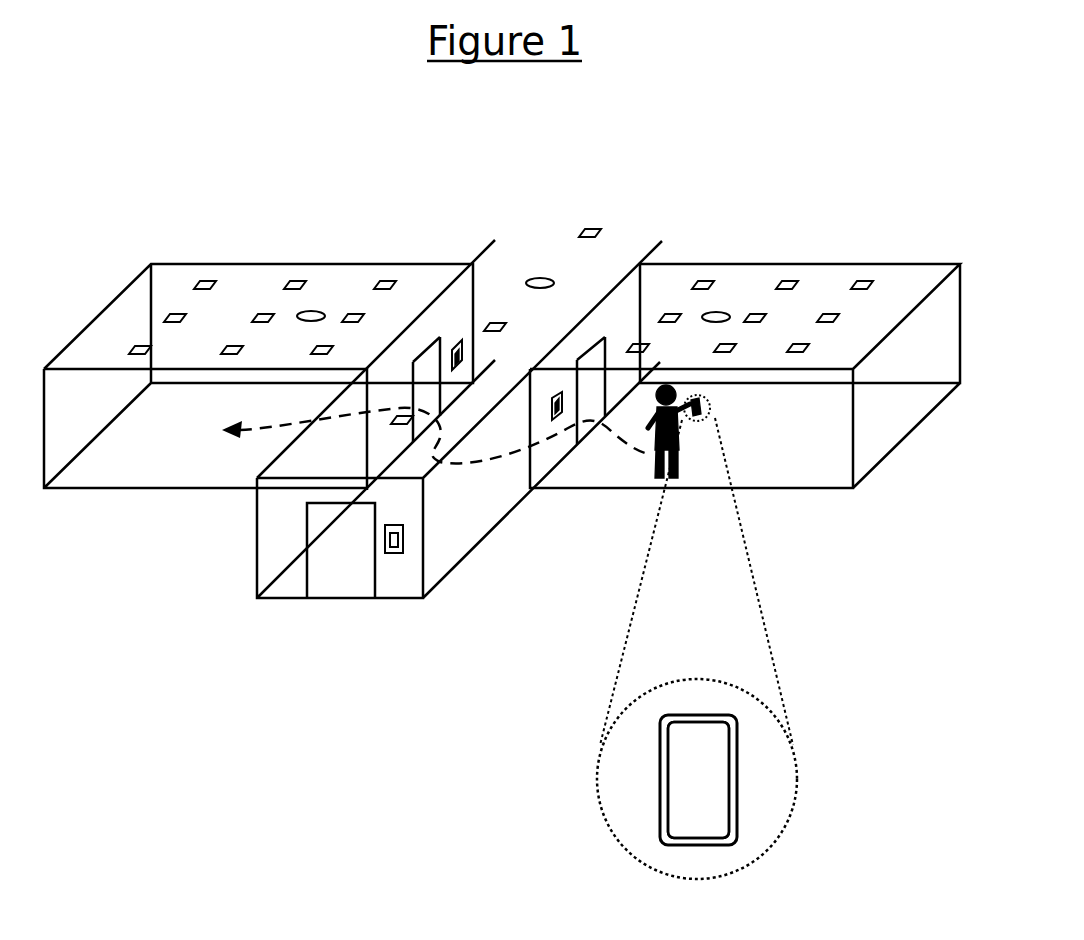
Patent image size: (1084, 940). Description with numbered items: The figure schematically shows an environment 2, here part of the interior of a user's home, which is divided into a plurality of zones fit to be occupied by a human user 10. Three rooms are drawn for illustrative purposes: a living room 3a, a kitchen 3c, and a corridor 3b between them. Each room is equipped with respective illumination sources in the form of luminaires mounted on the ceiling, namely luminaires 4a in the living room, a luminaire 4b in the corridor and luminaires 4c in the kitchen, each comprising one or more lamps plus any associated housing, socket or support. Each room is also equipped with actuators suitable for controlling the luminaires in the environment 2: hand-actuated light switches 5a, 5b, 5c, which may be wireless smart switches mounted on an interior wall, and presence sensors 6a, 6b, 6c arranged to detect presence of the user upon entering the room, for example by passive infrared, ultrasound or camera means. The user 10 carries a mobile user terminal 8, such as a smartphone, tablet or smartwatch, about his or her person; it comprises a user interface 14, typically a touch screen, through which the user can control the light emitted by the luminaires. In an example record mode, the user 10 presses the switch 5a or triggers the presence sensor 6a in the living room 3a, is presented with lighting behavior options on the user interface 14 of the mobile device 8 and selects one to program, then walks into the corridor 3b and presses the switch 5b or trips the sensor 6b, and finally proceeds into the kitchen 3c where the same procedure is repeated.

The environment 2 is at (722, 142).
The living room 3a is at (830, 490).
The corridor 3b is at (485, 540).
The kitchen 3c is at (150, 490).
The illumination sources of the living room 4a is at (788, 280).
The illumination source of the corridor 4b is at (590, 228).
The illumination sources of the kitchen 4c is at (205, 280).
The light switch of the living room 5a is at (554, 392).
The light switch of the corridor 5b is at (393, 554).
The light switch of the kitchen 5c is at (456, 346).
The presence sensor of the living room 6a is at (720, 316).
The presence sensor of the corridor 6b is at (538, 281).
The presence sensor of the kitchen 6c is at (312, 313).
The mobile user terminal 8 is at (712, 410).
The user 10 is at (652, 462).
The user interface 14 is at (708, 817).